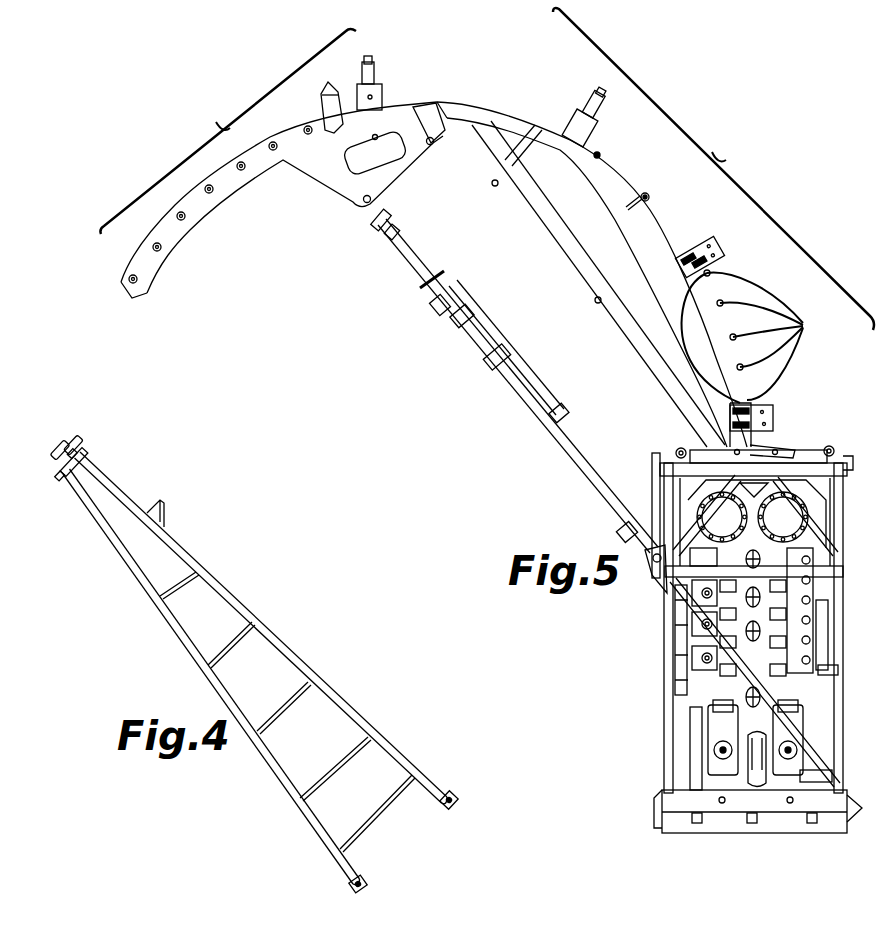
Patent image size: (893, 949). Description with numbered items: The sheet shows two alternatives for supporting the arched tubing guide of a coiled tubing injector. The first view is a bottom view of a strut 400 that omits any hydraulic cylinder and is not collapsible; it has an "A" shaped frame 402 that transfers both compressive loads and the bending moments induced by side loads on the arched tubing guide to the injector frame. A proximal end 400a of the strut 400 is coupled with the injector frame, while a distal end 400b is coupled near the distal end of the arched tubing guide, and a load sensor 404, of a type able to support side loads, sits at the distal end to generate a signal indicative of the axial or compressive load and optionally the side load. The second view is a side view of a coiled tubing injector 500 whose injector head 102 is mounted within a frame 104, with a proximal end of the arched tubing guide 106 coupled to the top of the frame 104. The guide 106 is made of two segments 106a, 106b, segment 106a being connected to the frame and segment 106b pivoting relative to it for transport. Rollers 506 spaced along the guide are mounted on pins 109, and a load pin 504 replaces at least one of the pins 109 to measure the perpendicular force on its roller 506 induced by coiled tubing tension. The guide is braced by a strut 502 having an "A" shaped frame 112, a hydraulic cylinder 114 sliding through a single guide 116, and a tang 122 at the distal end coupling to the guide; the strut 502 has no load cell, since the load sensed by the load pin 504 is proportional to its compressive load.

In FIG. 5, the injector head 102 is at (705, 698).
In FIG. 5, the frame 104 is at (667, 626).
In FIG. 5, the arched tubing guide 106 is at (478, 98).
In FIG. 5, the segment 106a is at (713, 169).
In FIG. 5, the segment 106b is at (228, 131).
In FIG. 5, the pins 109 is at (136, 282).
In FIG. 5, the "A" shaped frame 112 is at (583, 468).
In FIG. 5, the hydraulic cylinder 114 is at (410, 247).
In FIG. 5, the guide 116 is at (436, 306).
In FIG. 5, the tang 122 is at (372, 213).
In FIG. 4, the strut 400 is at (304, 594).
In FIG. 4, the proximal end 400a is at (457, 779).
In FIG. 4, the distal end 400b is at (87, 428).
In FIG. 4, the "A" shaped frame 402 is at (373, 694).
In FIG. 4, the load sensor 404 is at (87, 447).
In FIG. 5, the coiled tubing injector 500 is at (610, 355).
In FIG. 5, the strut 502 is at (492, 404).
In FIG. 5, the load pin 504 is at (636, 200).
In FIG. 5, the rollers 506 is at (598, 155).